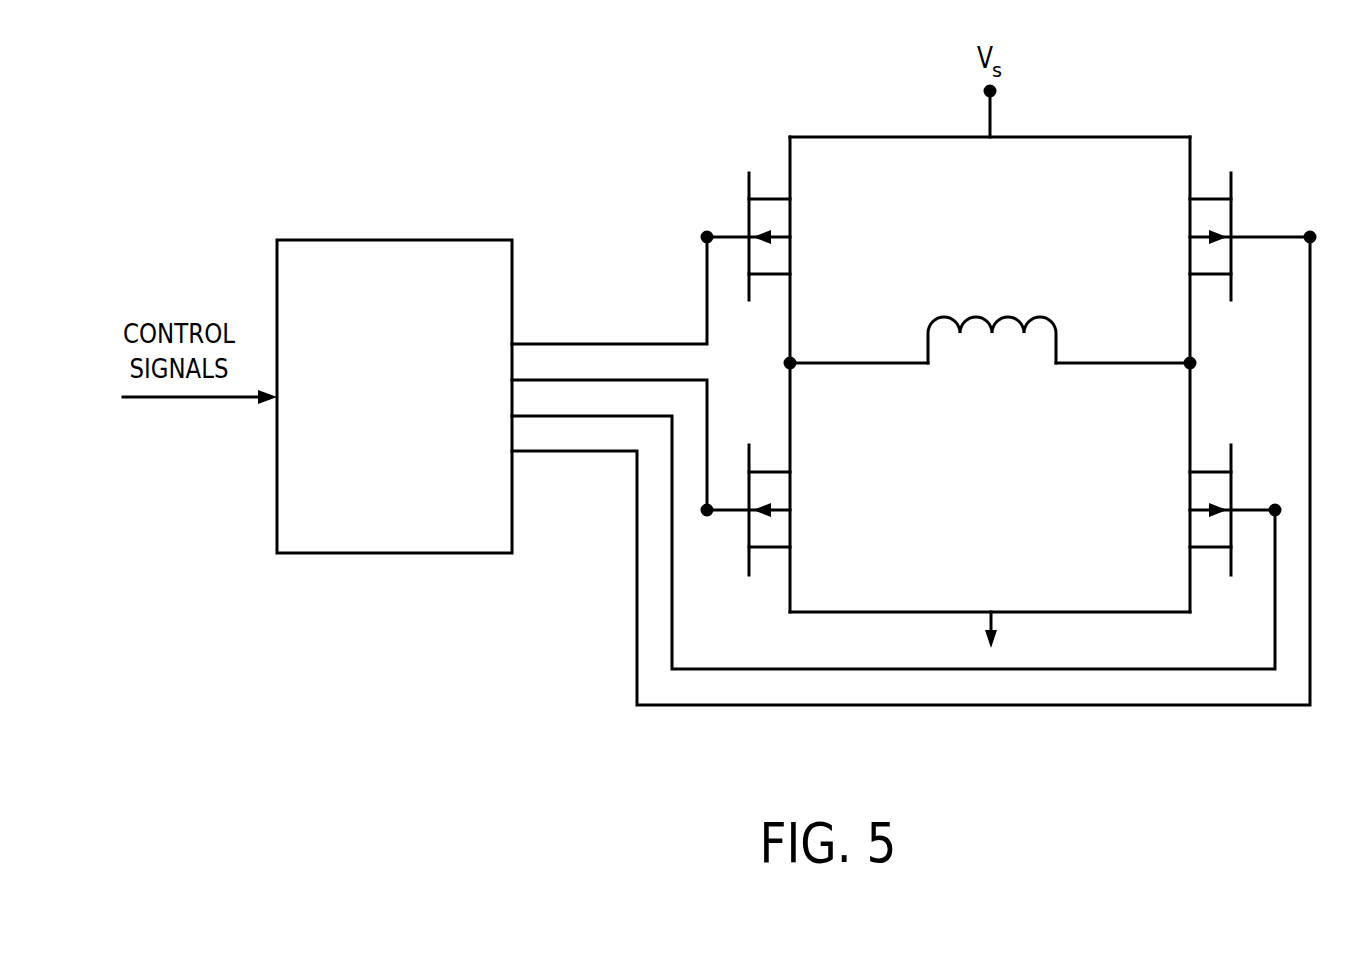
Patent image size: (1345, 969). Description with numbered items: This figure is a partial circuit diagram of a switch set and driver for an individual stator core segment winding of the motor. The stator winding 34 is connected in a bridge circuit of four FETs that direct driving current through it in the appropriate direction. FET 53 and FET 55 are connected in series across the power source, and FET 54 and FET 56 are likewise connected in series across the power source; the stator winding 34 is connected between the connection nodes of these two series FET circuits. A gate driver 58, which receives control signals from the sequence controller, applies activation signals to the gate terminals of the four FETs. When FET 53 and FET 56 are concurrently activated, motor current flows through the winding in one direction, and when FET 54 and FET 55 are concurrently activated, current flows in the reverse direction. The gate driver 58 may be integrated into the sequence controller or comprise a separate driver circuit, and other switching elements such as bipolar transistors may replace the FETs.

The stator winding 34 is at (975, 320).
The FET 53 is at (749, 188).
The FET 54 is at (1231, 188).
The FET 55 is at (749, 562).
The FET 56 is at (1231, 562).
The gate driver 58 is at (397, 555).